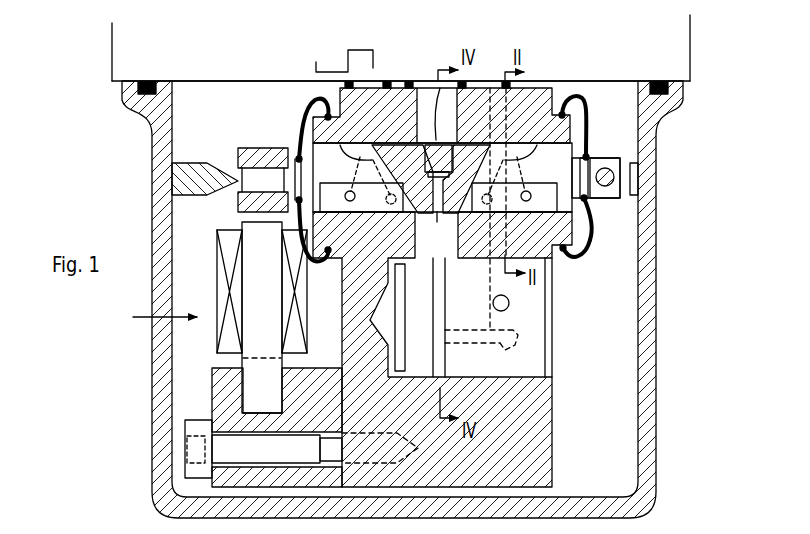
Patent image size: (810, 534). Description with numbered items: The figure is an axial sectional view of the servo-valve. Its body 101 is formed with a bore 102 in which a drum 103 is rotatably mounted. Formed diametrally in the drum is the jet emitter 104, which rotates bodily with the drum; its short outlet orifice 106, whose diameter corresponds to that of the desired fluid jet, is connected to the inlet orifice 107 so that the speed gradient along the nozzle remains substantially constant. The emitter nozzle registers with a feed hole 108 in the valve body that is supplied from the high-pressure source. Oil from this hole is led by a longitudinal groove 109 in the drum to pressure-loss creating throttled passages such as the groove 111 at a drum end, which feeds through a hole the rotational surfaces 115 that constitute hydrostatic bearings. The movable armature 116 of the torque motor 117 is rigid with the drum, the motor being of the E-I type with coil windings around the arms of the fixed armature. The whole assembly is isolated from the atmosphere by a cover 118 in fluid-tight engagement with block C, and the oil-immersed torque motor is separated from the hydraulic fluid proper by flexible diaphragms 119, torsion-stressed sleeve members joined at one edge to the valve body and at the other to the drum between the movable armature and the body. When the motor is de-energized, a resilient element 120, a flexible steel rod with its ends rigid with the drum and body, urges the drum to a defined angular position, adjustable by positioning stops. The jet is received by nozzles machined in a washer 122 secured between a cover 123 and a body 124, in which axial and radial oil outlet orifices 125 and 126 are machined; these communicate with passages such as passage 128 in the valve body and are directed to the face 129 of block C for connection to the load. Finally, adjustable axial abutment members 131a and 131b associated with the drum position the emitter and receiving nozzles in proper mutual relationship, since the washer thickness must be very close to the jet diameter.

The body 101 is at (537, 433).
The bore 102 is at (582, 224).
The drum 103 is at (442, 178).
The jet emitter 104 is at (440, 161).
The outlet orifice 106 is at (438, 232).
The inlet orifice 107 is at (432, 114).
The feed hole 108 is at (431, 140).
The longitudinal groove 109 is at (412, 88).
The groove 111 is at (404, 145).
The rotational surfaces 115 is at (438, 184).
The movable armature 116 is at (262, 148).
The torque motor 117 is at (262, 317).
The cover 118 is at (643, 487).
The flexible diaphragms 119 is at (306, 112).
The resilient element 120 is at (607, 168).
The washer 122 is at (440, 360).
The cover 123 is at (415, 317).
The body 124 is at (537, 355).
The axial oil outlet orifice 125 is at (458, 330).
The radial oil outlet orifice 126 is at (509, 303).
The passage 128 is at (560, 267).
The face 129 is at (208, 80).
The adjustable axial abutment member 131a is at (187, 181).
The adjustable axial abutment member 131b is at (636, 178).